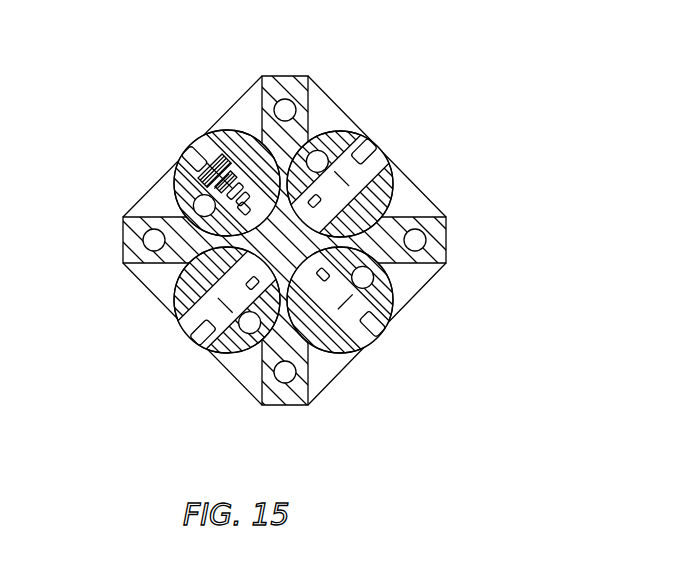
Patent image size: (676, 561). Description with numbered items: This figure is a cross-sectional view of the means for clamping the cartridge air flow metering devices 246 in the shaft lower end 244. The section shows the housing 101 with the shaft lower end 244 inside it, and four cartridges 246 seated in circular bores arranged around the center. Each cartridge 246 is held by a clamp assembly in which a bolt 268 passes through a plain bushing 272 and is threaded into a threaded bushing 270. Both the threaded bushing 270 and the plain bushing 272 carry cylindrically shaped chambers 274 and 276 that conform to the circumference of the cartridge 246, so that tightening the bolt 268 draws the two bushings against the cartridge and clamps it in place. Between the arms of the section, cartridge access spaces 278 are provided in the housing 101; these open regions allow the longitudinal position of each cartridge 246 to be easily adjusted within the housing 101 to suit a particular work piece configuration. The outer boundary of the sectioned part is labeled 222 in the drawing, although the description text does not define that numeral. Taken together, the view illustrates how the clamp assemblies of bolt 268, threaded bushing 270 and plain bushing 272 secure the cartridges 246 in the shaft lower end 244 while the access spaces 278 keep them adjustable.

The housing 101 is at (418, 218).
The housing block 222 is at (236, 104).
The cartridge access space 278 is at (157, 195).
The cartridge air flow metering device 246 is at (326, 132).
The shaft lower end 244 is at (395, 167).
The threaded bushing 270 is at (330, 288).
The cylindrically shaped chamber 274 is at (385, 281).
The bolt 268 is at (373, 322).
The plain bushing 272 is at (352, 308).
The cylindrically shaped chamber 276 is at (366, 277).